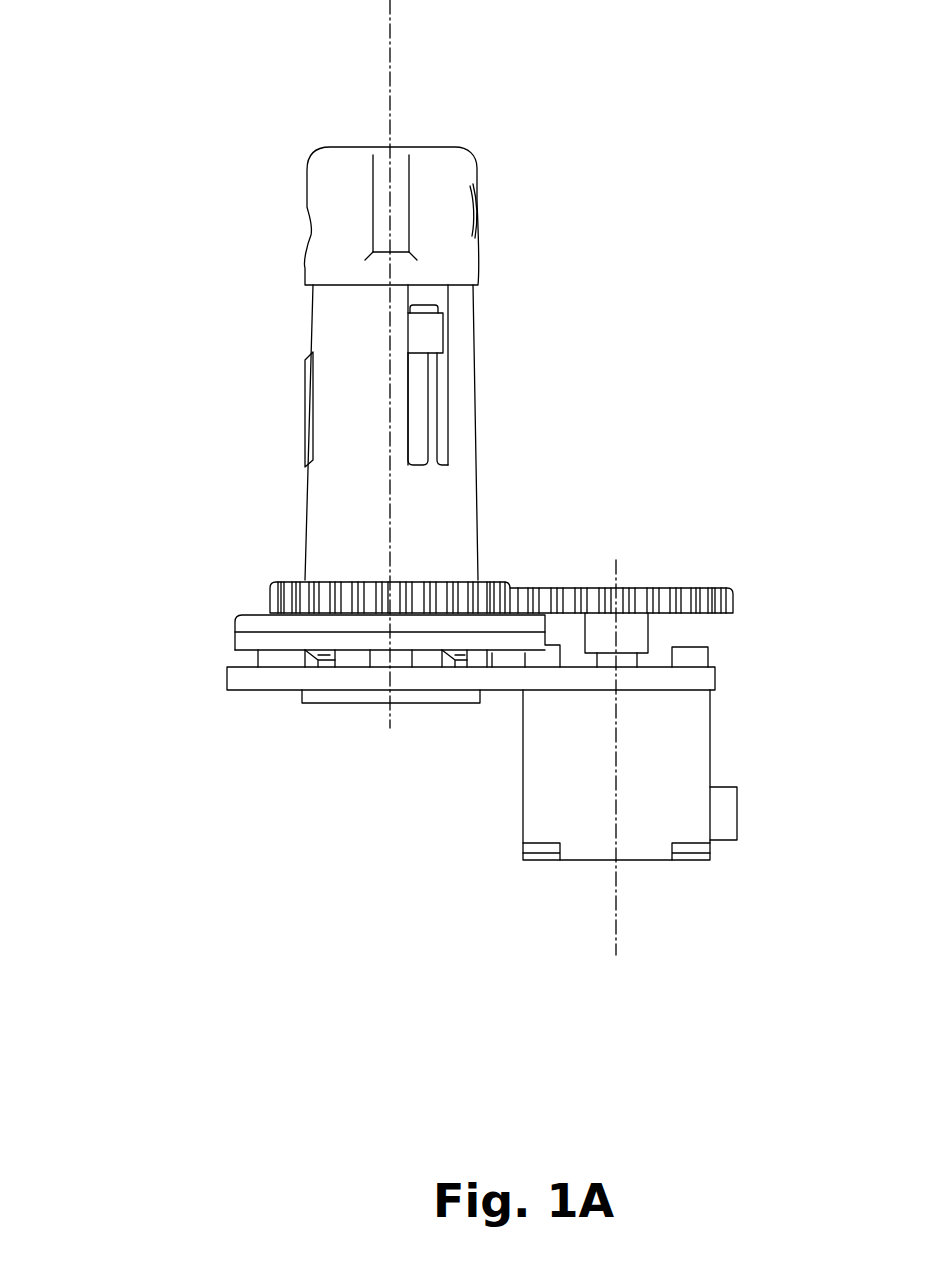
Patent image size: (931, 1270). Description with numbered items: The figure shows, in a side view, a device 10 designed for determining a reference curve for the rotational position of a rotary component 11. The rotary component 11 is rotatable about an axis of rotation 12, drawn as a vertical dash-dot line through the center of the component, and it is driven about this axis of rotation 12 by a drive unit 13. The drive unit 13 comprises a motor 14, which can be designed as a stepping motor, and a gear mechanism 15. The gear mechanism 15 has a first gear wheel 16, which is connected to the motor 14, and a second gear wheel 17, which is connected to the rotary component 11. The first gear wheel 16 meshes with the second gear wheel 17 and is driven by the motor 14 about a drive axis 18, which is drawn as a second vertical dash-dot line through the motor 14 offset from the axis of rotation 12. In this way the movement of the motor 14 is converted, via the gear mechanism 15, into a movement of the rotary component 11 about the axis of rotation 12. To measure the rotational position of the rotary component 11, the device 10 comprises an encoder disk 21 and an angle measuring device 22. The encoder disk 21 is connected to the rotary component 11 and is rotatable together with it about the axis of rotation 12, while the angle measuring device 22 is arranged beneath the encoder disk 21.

The device 10 is at (176, 628).
The rotary component 11 is at (522, 211).
The axis of rotation 12 is at (389, 14).
The drive unit 13 is at (507, 850).
The motor 14 is at (700, 755).
The gear mechanism 15 is at (518, 562).
The first gear wheel 16 is at (735, 602).
The second gear wheel 17 is at (274, 600).
The drive axis 18 is at (617, 924).
The encoder disk 21 is at (224, 652).
The angle measuring device 22 is at (340, 724).